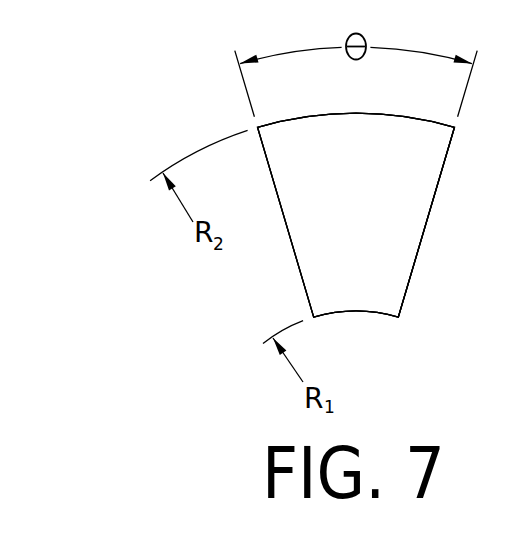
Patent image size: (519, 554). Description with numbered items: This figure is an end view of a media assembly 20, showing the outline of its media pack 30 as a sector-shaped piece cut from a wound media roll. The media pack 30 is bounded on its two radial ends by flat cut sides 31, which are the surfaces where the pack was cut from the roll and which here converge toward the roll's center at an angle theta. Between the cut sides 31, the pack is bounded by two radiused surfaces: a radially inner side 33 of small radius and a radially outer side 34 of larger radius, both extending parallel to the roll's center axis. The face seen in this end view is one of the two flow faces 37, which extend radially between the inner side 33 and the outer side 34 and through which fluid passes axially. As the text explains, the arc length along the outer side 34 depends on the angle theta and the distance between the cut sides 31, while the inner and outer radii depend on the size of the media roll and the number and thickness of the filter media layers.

The media assembly 20 is at (180, 98).
The media pack 30 is at (438, 185).
The cut sides 31 is at (274, 186).
The inner side 33 is at (357, 312).
The outer side 34 is at (400, 116).
The flow faces 37 is at (397, 272).